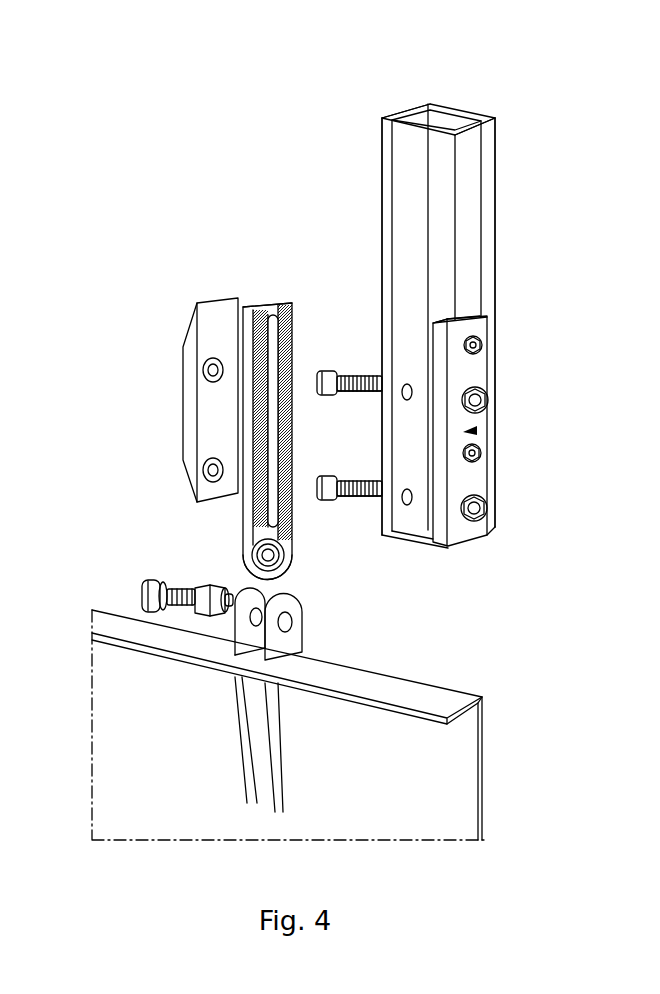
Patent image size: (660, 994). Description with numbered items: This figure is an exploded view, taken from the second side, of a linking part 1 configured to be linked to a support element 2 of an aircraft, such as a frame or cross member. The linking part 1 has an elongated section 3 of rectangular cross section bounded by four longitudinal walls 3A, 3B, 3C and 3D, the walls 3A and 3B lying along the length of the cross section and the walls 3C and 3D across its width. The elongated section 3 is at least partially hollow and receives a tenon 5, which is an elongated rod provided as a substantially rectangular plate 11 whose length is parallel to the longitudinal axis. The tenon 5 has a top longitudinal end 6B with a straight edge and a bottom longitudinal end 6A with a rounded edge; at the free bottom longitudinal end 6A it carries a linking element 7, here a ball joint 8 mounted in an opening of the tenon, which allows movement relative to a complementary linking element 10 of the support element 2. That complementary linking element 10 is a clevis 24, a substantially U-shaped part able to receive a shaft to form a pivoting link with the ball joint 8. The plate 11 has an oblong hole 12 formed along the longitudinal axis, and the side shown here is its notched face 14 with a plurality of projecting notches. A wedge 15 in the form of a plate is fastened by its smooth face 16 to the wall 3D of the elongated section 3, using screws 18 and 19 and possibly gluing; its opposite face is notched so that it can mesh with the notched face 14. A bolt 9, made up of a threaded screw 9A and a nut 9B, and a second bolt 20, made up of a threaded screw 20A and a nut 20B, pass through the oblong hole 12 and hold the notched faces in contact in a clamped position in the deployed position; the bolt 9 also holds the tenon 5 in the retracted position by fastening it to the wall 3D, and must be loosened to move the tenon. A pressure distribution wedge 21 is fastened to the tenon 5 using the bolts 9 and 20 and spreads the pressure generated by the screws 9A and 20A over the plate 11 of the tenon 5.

The linking part 1 is at (572, 214).
The support element 2 is at (485, 693).
The elongated section 3 is at (450, 78).
The longitudinal wall 3A is at (407, 125).
The longitudinal wall 3B is at (460, 110).
The longitudinal wall 3C is at (406, 112).
The longitudinal wall 3D is at (471, 127).
The tenon 5 is at (265, 284).
The bottom longitudinal end 6A is at (332, 571).
The top longitudinal end 6B is at (238, 278).
The linking element 7 is at (216, 541).
The ball joint 8 is at (296, 566).
The bolt 9 is at (330, 348).
The threaded screw 9A is at (352, 396).
The nut 9B is at (490, 400).
The complementary linking element 10 is at (326, 638).
The plate 11 is at (282, 303).
The oblong hole 12 is at (258, 498).
The notched face 14 is at (300, 316).
The wedge 15 is at (465, 372).
The smooth face 16 is at (477, 431).
The screw 18 is at (485, 345).
The screw 19 is at (487, 455).
The bolt 20 is at (314, 461).
The threaded screw 20A is at (358, 505).
The nut 20B is at (490, 510).
The pressure distribution wedge 21 is at (198, 303).
The clevis 24 is at (222, 638).